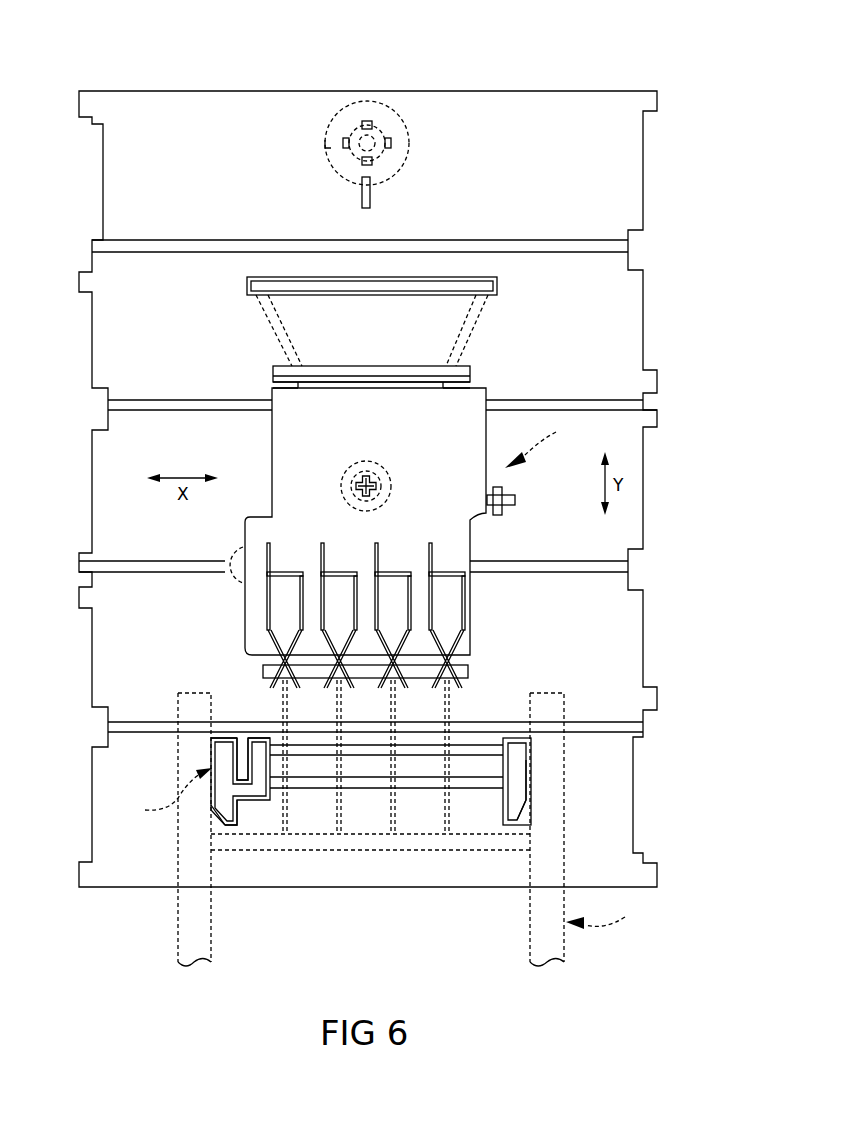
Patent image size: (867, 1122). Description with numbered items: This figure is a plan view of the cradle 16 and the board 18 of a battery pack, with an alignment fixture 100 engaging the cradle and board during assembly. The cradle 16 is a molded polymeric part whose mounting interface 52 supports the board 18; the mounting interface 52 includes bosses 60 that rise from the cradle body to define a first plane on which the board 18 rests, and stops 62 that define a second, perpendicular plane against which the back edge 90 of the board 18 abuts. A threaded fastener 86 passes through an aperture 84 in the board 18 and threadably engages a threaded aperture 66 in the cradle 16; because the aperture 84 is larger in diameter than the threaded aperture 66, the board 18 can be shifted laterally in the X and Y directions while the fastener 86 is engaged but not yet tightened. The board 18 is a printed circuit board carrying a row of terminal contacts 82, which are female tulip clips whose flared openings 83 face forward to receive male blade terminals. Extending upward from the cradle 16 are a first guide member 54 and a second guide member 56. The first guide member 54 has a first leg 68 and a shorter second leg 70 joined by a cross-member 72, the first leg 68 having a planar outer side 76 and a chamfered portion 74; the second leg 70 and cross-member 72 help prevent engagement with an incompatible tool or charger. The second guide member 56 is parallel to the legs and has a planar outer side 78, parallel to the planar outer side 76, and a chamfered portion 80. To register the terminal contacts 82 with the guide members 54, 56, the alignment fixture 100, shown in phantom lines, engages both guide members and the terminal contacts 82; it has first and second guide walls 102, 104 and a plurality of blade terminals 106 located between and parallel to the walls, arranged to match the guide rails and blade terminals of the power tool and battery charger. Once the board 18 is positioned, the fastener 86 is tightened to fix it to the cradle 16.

The cradle 16 is at (588, 91).
The board 18 is at (472, 450).
The mounting interface 52 is at (542, 442).
The first guide member 54 is at (314, 783).
The second guide member 56 is at (518, 770).
The bosses 60 is at (505, 515).
The stops 62 is at (465, 396).
The threaded aperture 66 is at (385, 466).
The first leg 68 is at (222, 748).
The second leg 70 is at (255, 752).
The cross-member 72 is at (245, 790).
The chamfered portion 74 is at (212, 818).
The planar outer side 76 is at (205, 795).
The planar outer side 78 is at (533, 782).
The chamfered portion 80 is at (525, 810).
The terminal contacts 82 is at (287, 570).
The flared openings 83 is at (338, 688).
The aperture 84 is at (355, 465).
The threaded fastener 86 is at (388, 493).
The back edge 90 is at (415, 380).
The alignment fixture 100 is at (612, 918).
The first guide wall 102 is at (175, 915).
The second guide wall 104 is at (530, 920).
The blade terminals 106 is at (345, 835).